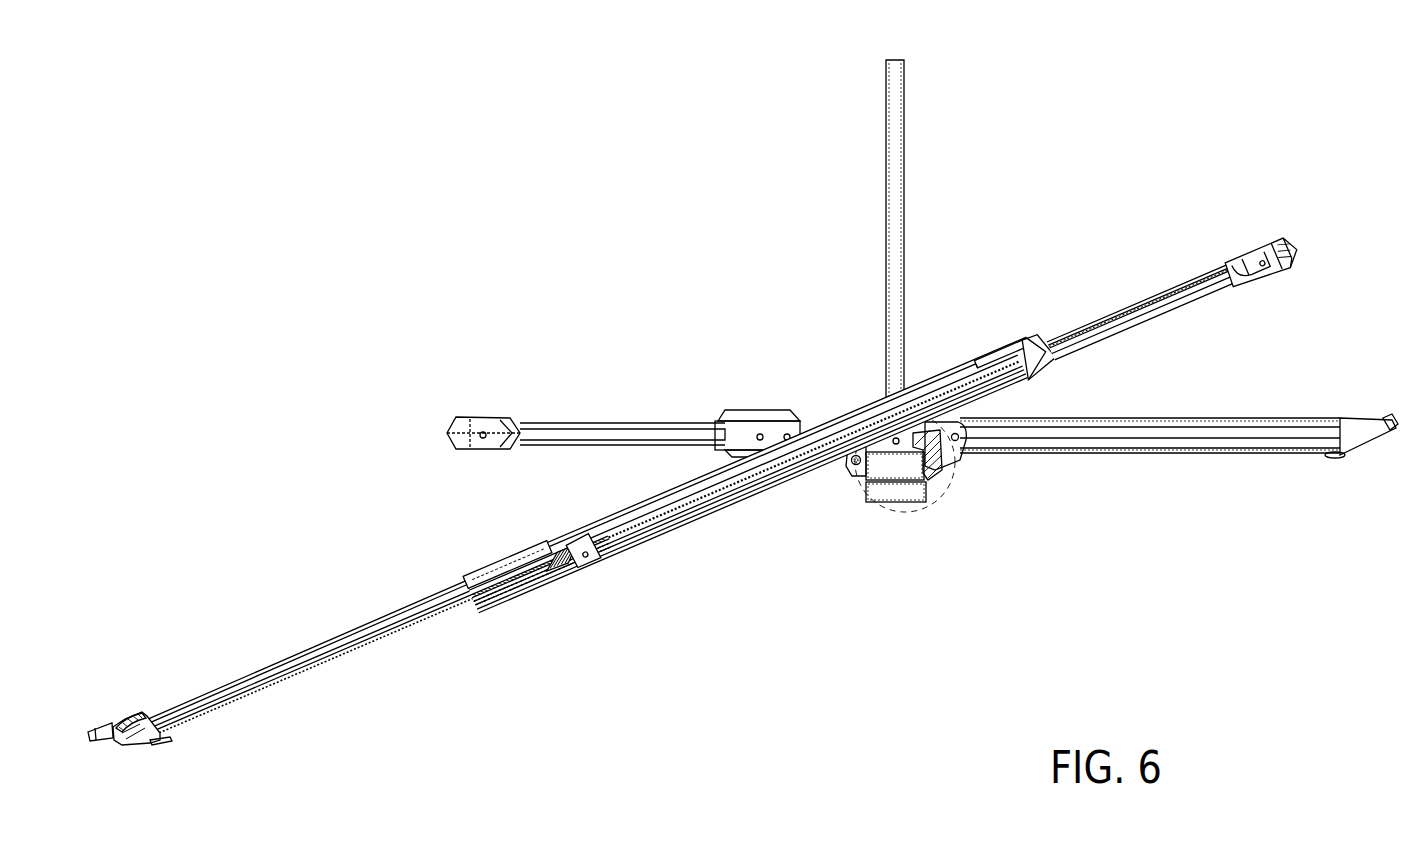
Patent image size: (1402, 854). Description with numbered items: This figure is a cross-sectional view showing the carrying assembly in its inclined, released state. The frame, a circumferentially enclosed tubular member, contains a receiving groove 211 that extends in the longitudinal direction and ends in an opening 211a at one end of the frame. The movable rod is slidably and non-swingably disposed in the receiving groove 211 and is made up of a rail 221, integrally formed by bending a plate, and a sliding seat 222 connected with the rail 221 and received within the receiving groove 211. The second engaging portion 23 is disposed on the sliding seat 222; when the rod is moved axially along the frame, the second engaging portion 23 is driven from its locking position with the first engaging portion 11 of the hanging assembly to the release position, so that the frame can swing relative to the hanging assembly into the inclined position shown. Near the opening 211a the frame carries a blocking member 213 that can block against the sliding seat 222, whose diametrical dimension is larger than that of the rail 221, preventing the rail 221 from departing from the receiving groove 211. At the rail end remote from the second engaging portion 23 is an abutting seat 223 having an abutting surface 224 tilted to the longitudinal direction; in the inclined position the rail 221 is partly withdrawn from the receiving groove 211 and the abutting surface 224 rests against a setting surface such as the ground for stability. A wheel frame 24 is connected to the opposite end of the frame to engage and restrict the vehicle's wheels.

The first engaging portion 11 is at (942, 474).
The wheel frame 24 is at (1132, 302).
The receiving groove 211 is at (718, 480).
The opening 211a is at (467, 579).
The blocking member 213 is at (512, 594).
The rail 221 is at (318, 662).
The sliding seat 222 is at (566, 566).
The abutting seat 223 is at (124, 690).
The abutting surface 224 is at (127, 745).
The second engaging portion 23 is at (600, 580).